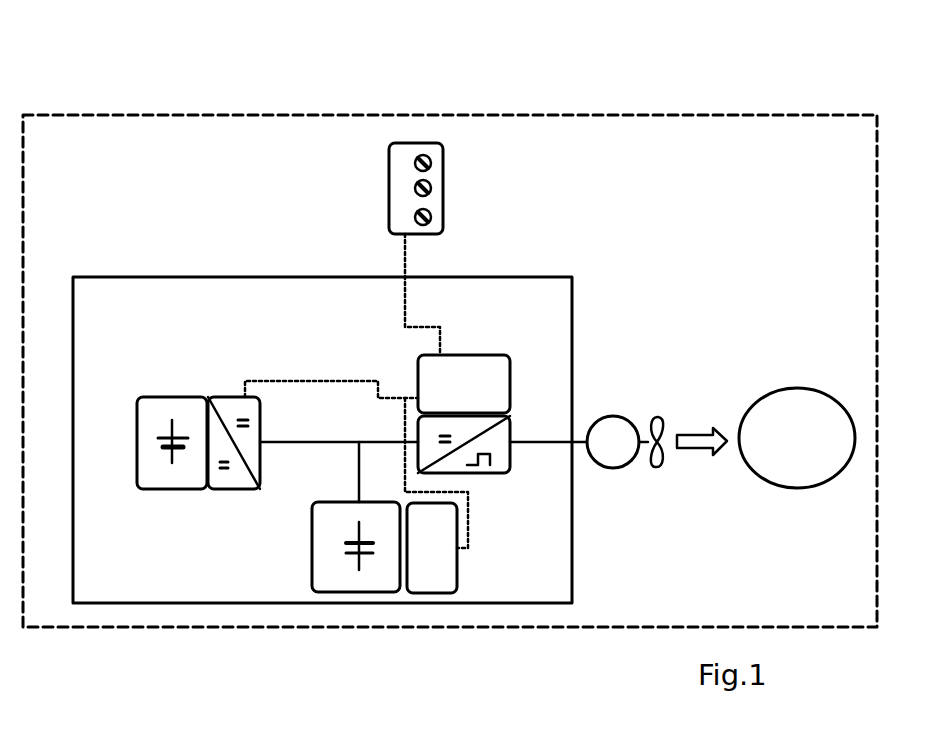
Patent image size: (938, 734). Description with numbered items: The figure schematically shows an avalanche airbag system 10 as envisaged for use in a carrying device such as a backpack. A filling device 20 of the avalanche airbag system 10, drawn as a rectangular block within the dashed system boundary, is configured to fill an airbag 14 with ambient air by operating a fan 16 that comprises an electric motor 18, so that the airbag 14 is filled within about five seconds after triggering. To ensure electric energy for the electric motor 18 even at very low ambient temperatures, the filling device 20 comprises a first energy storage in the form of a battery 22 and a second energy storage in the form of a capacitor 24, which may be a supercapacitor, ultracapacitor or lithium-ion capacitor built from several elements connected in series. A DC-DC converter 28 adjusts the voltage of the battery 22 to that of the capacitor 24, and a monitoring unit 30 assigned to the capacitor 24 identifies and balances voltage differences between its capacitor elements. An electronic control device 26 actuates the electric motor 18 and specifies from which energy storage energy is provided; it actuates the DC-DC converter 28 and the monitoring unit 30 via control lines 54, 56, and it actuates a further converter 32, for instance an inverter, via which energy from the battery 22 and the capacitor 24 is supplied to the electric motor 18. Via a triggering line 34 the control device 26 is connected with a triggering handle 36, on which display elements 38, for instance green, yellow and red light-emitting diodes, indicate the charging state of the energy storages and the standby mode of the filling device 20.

The avalanche airbag system 10 is at (100, 108).
The airbag 14 is at (787, 418).
The fan 16 is at (630, 412).
The electric motor 18 is at (613, 458).
The filling device 20 is at (590, 268).
The battery 22 is at (167, 478).
The capacitor 24 is at (327, 566).
The electronic control device 26 is at (447, 368).
The DC-DC converter 28 is at (235, 407).
The monitoring unit 30 is at (442, 566).
The further converter 32 is at (497, 462).
The triggering line 34 is at (405, 303).
The triggering handle 36 is at (400, 173).
The display elements 38 is at (432, 163).
The control line 54 is at (295, 381).
The control line 56 is at (468, 508).